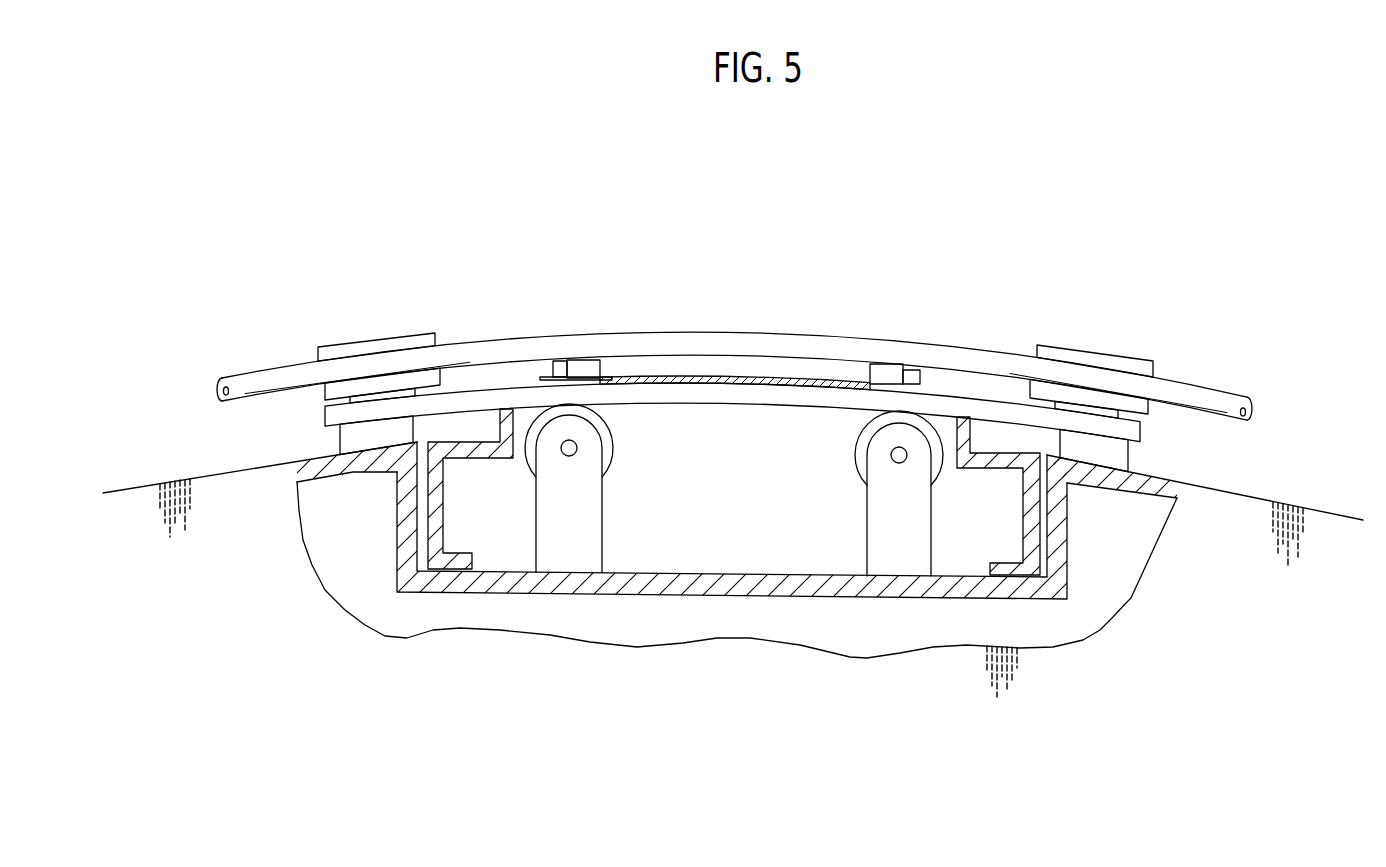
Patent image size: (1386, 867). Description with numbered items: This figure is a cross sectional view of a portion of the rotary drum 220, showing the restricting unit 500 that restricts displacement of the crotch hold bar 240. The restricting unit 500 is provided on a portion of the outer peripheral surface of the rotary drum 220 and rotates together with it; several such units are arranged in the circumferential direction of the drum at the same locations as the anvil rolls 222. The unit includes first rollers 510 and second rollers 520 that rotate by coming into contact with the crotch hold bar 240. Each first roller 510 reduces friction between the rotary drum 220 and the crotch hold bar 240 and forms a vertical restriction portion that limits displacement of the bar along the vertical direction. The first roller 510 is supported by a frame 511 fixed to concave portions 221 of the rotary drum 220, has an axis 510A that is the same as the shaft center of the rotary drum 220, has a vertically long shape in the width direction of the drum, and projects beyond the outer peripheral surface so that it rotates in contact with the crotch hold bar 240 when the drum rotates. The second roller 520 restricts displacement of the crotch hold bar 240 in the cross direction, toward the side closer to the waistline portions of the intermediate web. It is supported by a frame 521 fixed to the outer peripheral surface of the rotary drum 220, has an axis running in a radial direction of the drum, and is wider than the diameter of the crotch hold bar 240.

The restricting unit 500 is at (953, 182).
The rotary drum 220 is at (1323, 508).
The concave portion 221 is at (727, 558).
The anvil roll 222 is at (732, 365).
The crotch hold bar 240 is at (1208, 397).
The second roller 520 is at (382, 336).
The frame 521 is at (478, 397).
The first roller 510 is at (530, 450).
The axis 510A is at (569, 448).
The frame 511 is at (571, 557).